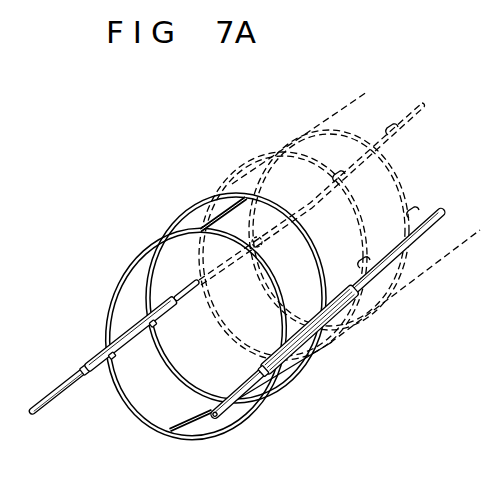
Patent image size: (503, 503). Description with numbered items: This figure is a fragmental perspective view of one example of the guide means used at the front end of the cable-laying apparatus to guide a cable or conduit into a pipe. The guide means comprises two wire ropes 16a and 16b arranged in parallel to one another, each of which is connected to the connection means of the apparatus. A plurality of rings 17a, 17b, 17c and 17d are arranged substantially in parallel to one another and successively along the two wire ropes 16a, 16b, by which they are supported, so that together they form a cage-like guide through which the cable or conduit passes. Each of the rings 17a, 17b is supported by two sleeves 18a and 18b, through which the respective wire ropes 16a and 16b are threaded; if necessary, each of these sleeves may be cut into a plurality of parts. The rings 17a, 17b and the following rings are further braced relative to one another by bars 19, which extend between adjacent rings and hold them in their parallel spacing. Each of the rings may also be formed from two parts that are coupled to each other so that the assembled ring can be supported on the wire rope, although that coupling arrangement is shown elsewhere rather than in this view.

The wire rope 16a is at (50, 402).
The wire rope 16b is at (233, 404).
The ring 17a is at (115, 293).
The ring 17b is at (167, 228).
The ring 17c is at (245, 168).
The ring 17d is at (294, 138).
The sleeve 18a is at (100, 357).
The sleeve 18b is at (332, 324).
The bar 19 is at (213, 219).